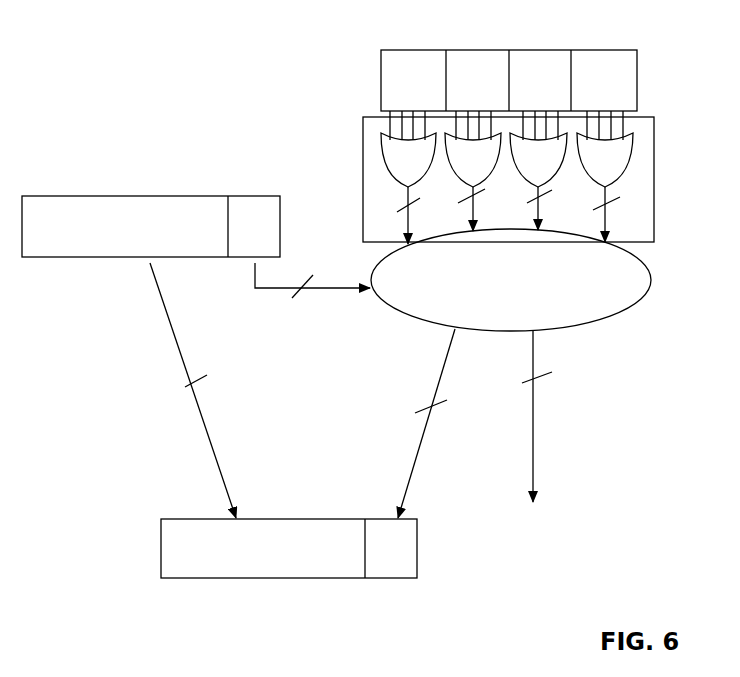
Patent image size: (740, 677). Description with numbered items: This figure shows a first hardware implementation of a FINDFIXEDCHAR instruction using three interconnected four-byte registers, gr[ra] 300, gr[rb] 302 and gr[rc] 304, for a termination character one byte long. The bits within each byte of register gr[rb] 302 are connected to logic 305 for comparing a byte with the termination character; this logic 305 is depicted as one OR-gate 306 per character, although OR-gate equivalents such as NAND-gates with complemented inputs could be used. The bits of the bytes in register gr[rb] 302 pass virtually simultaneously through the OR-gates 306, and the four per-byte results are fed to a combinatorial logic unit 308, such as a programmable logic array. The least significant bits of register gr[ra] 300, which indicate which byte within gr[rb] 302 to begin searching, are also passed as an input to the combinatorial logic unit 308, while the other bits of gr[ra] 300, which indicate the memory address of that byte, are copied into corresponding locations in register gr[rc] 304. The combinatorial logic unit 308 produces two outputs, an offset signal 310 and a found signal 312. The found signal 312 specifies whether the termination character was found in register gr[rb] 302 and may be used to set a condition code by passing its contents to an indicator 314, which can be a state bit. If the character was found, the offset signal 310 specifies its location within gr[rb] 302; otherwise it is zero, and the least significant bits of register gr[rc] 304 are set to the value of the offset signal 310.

The register gr[ra] 300 is at (70, 196).
The register gr[rb] 302 is at (390, 50).
The register gr[rc] 304 is at (342, 580).
The logic 305 is at (655, 150).
The OR-gate 306 is at (382, 158).
The combinatorial logic unit 308 is at (371, 270).
The offset signal 310 is at (440, 362).
The found signal 312 is at (533, 425).
The indicator1 314 is at (543, 525).